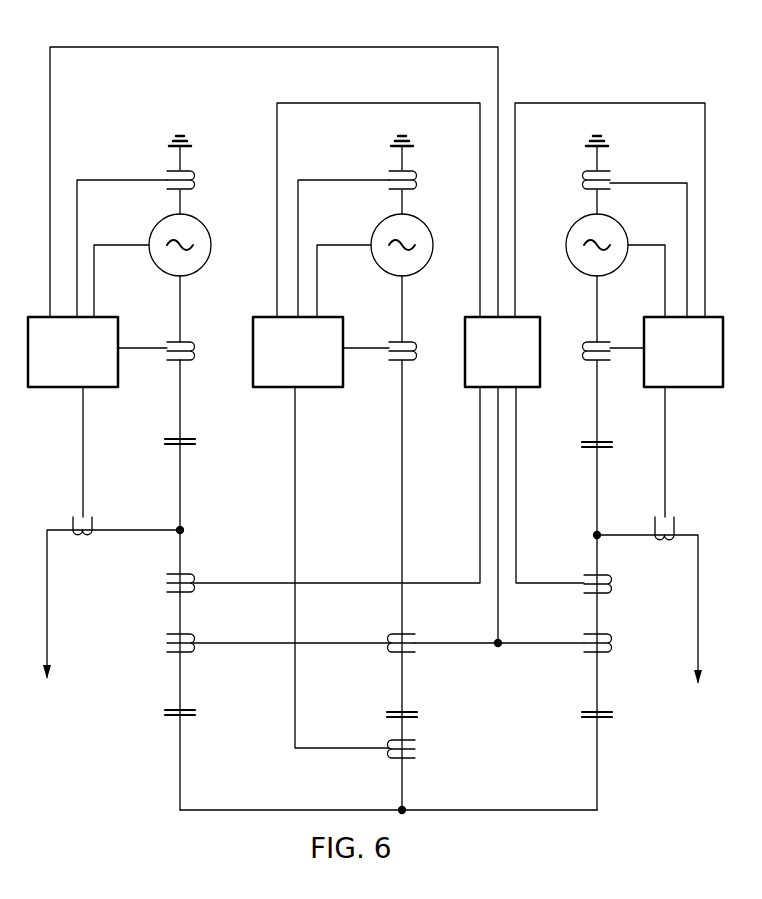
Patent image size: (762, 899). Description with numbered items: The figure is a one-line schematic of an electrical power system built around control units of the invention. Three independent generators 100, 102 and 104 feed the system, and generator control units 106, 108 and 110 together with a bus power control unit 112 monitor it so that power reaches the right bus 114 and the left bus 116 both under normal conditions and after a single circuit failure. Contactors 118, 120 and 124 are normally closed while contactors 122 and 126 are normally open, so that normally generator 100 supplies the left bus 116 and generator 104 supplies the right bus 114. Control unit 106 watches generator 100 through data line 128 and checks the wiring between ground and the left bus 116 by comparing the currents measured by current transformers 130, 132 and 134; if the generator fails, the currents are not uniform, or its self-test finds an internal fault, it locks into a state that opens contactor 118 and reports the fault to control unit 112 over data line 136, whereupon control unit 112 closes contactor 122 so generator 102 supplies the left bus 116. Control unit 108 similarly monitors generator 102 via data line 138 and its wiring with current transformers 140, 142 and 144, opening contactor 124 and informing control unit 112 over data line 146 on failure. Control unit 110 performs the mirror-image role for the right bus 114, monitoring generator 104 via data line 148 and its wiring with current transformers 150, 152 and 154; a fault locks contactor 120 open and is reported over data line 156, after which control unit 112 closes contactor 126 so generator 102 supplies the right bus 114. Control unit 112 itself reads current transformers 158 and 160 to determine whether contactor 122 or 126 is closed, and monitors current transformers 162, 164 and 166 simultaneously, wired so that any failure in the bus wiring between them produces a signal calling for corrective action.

The generator 100 is at (208, 223).
The generator 102 is at (430, 223).
The generator 104 is at (622, 223).
The generator control unit 106 is at (118, 380).
The generator control unit 108 is at (343, 380).
The generator control unit 110 is at (644, 373).
The bus power control unit 112 is at (465, 373).
The right bus 114 is at (698, 625).
The left bus 116 is at (47, 630).
The contactor 118 is at (185, 437).
The contactor 120 is at (592, 440).
The contactor 122 is at (185, 708).
The contactor 124 is at (407, 710).
The contactor 126 is at (605, 710).
The data line 128 is at (94, 297).
The current transformer 130 is at (187, 176).
The current transformer 132 is at (190, 347).
The current transformer 134 is at (90, 539).
The data line 136 is at (50, 135).
The data line 138 is at (317, 297).
The current transformer 140 is at (410, 176).
The current transformer 142 is at (412, 347).
The current transformer 144 is at (408, 746).
The data line 146 is at (385, 103).
The data line 148 is at (665, 250).
The current transformer 150 is at (605, 174).
The current transformer 152 is at (600, 346).
The current transformer 154 is at (660, 540).
The data line 156 is at (705, 130).
The current transformer 158 is at (190, 578).
The current transformer 160 is at (592, 573).
The current transformer 162 is at (190, 638).
The current transformer 164 is at (410, 638).
The current transformer 166 is at (594, 636).